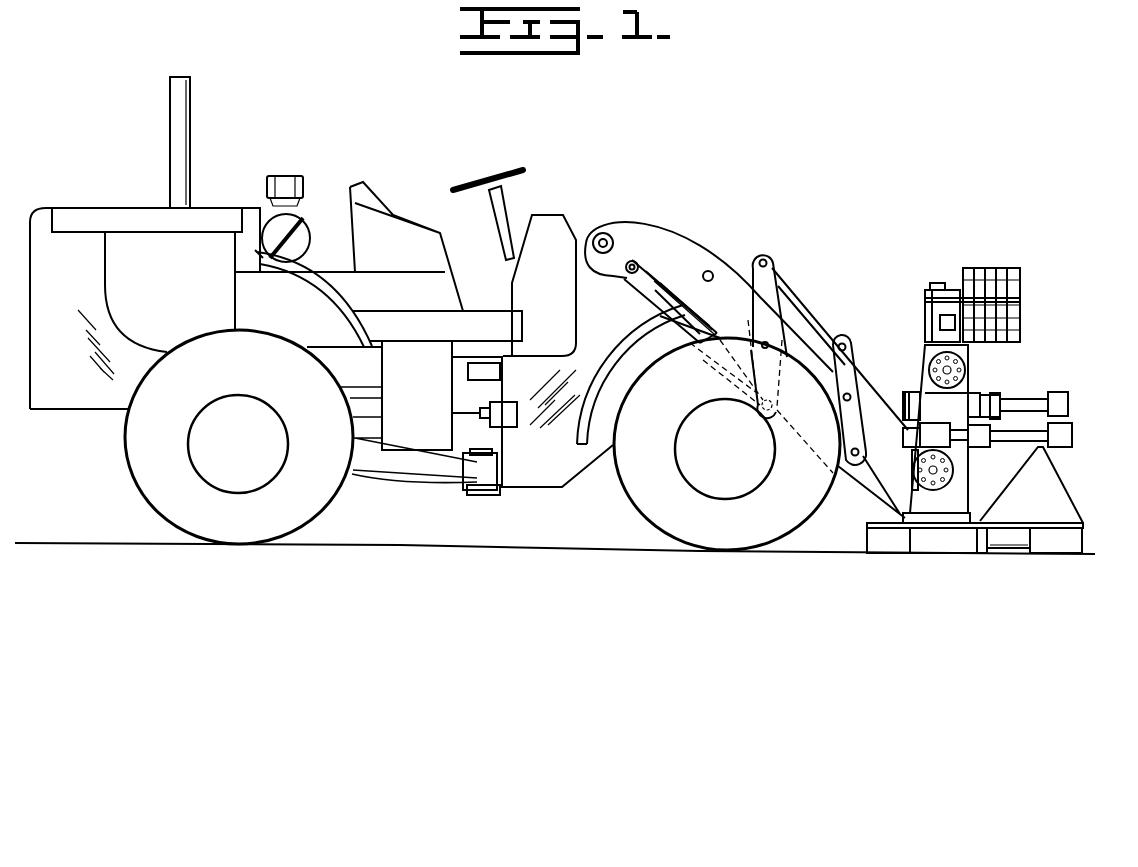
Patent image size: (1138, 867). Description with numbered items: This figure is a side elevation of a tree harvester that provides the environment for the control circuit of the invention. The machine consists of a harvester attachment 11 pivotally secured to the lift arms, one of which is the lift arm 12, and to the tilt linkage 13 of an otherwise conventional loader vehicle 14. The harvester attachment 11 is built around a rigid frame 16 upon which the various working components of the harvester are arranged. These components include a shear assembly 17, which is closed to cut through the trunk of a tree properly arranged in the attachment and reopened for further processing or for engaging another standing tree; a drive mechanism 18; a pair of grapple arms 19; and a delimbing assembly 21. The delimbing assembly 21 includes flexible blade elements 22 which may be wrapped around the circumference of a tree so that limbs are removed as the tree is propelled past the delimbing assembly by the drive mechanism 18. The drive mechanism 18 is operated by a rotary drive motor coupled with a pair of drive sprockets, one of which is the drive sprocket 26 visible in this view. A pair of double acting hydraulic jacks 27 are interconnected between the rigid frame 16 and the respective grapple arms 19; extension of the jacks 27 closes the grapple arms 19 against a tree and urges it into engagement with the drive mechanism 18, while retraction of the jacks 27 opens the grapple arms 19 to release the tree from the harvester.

The harvester attachment 11 is at (938, 259).
The lift arm 12 is at (663, 230).
The tilt linkage 13 is at (818, 318).
The loader vehicle 14 is at (424, 157).
The rigid frame 16 is at (918, 476).
The shear assembly 17 is at (984, 556).
The drive mechanism 18 is at (966, 390).
The grapple arms 19 is at (1078, 400).
The delimbing assembly 21 is at (997, 259).
The flexible blade elements 22 is at (1022, 285).
The drive sprocket 26 is at (926, 482).
The double acting hydraulic jacks 27 is at (916, 394).